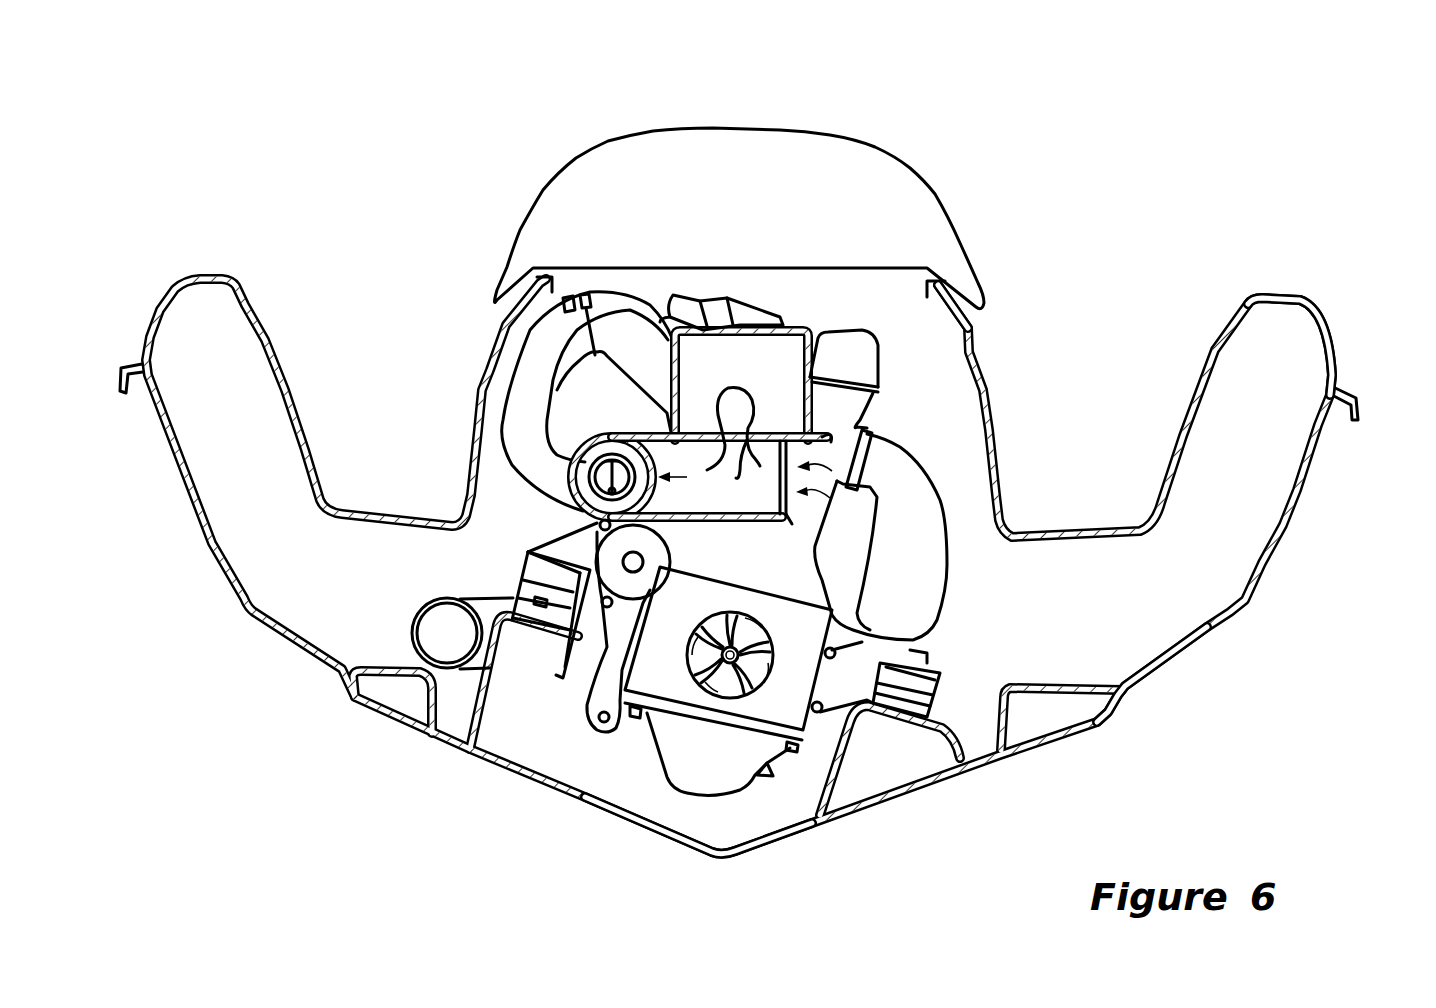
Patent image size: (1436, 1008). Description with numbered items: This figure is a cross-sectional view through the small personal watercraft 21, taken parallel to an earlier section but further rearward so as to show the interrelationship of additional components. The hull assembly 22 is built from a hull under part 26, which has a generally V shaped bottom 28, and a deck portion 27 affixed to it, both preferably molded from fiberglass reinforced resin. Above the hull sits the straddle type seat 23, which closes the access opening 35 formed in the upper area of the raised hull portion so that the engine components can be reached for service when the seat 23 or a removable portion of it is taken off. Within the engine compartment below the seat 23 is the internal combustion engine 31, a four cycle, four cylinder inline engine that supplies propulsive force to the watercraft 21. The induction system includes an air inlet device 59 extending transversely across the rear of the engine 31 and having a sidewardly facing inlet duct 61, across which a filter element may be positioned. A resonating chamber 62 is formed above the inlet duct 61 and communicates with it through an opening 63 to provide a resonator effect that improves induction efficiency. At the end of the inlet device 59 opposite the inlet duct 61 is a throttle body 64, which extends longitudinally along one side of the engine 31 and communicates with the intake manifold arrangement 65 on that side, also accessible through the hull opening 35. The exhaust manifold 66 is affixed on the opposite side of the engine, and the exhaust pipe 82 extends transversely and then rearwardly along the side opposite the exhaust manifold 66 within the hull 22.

The personal watercraft 21 is at (990, 132).
The hull assembly 22 is at (1297, 520).
The straddle type seat 23 is at (596, 143).
The hull under part 26 is at (1152, 666).
The deck portion 27 is at (1332, 347).
The V shaped bottom 28 is at (793, 833).
The internal combustion engine 31 is at (895, 378).
The access opening 35 is at (893, 283).
The air inlet device 59 is at (727, 531).
The inlet duct 61 is at (810, 453).
The resonating chamber 62 is at (816, 326).
The opening 63 is at (744, 417).
The throttle body 64 is at (598, 480).
The intake manifold arrangement 65 is at (637, 297).
The exhaust manifold 66 is at (945, 607).
The exhaust pipe 82 is at (407, 623).